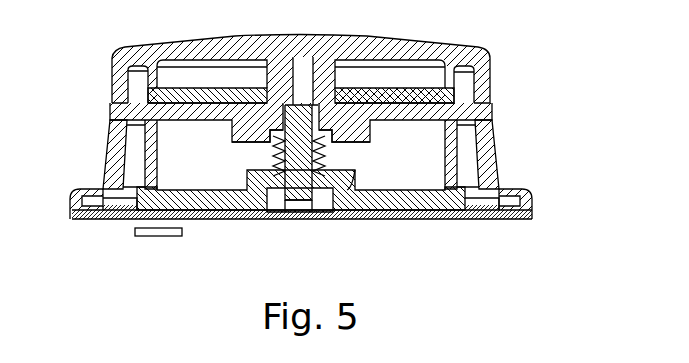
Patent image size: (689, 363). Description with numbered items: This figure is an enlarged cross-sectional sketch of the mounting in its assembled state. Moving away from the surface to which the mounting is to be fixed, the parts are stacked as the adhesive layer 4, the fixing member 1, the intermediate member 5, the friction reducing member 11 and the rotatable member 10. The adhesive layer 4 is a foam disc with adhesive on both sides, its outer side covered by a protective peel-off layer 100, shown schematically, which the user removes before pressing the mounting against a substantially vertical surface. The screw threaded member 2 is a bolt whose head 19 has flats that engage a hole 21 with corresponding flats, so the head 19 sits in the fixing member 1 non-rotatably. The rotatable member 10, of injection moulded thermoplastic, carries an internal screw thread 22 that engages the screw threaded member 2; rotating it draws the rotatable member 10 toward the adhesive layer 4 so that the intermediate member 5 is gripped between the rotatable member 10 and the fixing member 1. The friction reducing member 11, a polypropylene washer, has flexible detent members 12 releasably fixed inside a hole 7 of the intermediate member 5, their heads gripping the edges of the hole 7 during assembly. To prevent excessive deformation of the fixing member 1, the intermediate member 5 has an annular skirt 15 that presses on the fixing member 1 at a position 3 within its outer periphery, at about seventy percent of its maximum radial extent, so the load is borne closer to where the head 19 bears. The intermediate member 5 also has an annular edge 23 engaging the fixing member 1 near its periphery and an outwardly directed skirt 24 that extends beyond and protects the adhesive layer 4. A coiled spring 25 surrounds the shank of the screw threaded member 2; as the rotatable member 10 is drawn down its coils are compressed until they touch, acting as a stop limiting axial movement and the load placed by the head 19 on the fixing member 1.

The fixing member 1 is at (244, 213).
The screw threaded member 2 is at (298, 102).
The position 3 is at (443, 213).
The adhesive layer 4 is at (478, 219).
The intermediate member 5 is at (490, 174).
The hole 7 is at (376, 116).
The rotatable member 10 is at (488, 78).
The friction reducing member 11 is at (455, 92).
The flexible detent members 12 is at (247, 140).
The annular skirt 15 is at (486, 134).
The head 19 is at (318, 200).
The hole 21 is at (278, 212).
The screw thread 22 is at (322, 112).
The annular edge 23 is at (132, 214).
The outwardly directed skirt 24 is at (70, 218).
The coiled spring 25 is at (333, 143).
The peel-off layer 100 is at (162, 237).